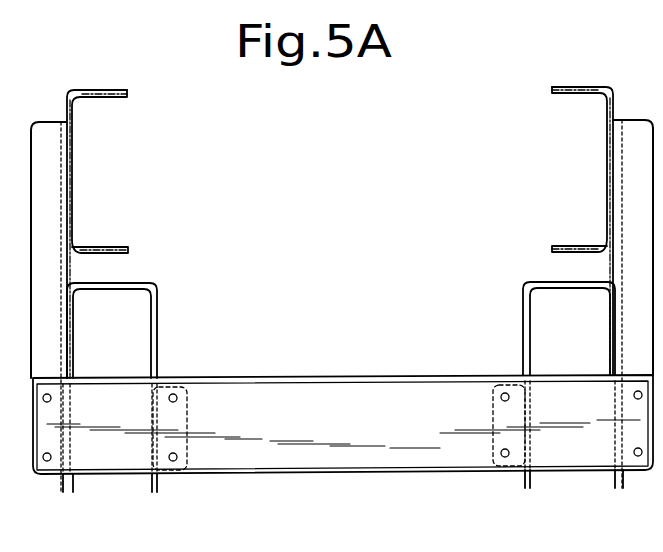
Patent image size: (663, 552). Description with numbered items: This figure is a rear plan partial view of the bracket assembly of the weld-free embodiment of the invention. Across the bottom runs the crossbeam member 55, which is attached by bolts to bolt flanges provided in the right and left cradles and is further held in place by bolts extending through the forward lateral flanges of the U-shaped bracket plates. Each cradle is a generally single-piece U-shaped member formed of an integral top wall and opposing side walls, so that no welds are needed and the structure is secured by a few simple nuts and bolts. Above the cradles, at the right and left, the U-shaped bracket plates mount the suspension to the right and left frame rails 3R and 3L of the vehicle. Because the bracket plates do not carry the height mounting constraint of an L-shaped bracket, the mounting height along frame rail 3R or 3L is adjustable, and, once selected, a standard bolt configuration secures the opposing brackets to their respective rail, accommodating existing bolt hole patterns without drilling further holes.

The right frame rail 3R is at (93, 96).
The left frame rail 3L is at (585, 94).
The crossbeam member 55 is at (288, 461).